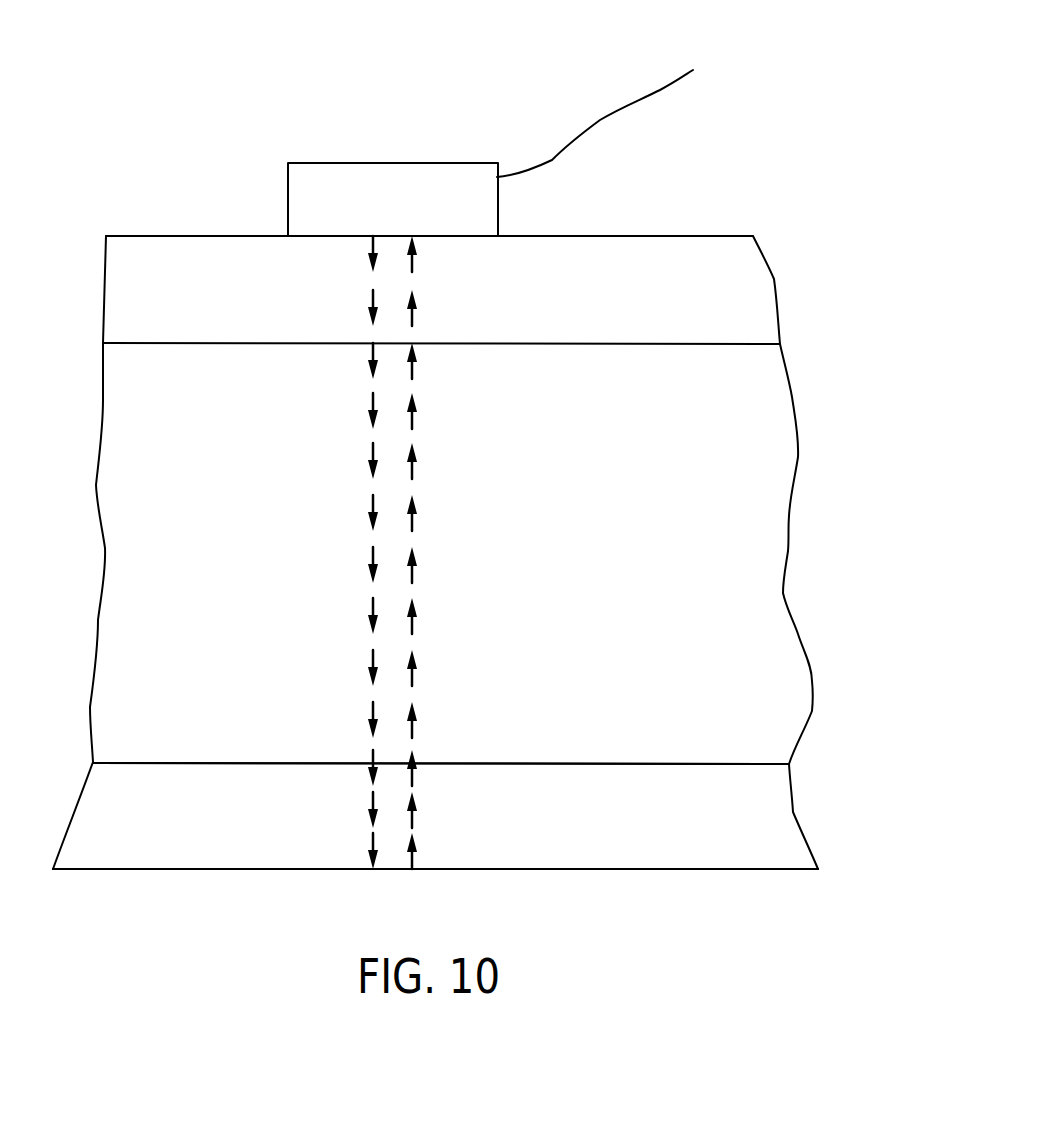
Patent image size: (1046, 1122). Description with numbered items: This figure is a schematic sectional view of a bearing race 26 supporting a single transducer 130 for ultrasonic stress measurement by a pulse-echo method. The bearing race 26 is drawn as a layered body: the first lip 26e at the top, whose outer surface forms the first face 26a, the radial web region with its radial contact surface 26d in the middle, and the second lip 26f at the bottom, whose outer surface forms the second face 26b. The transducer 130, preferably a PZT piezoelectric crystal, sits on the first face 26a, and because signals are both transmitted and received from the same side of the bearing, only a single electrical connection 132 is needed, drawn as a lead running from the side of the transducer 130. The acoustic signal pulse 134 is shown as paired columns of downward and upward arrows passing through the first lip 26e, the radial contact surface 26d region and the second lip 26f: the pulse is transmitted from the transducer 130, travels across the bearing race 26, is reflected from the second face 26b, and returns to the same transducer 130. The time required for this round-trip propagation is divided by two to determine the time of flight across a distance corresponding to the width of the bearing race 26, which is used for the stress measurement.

The bearing race 26 is at (782, 100).
The first face 26a is at (705, 237).
The second face 26b is at (765, 871).
The radial contact surface 26d is at (768, 551).
The first lip 26e is at (768, 282).
The second lip 26f is at (789, 838).
The transducer 130 is at (392, 163).
The electrical connection 132 is at (552, 160).
The acoustic signal pulse 134 is at (373, 500).